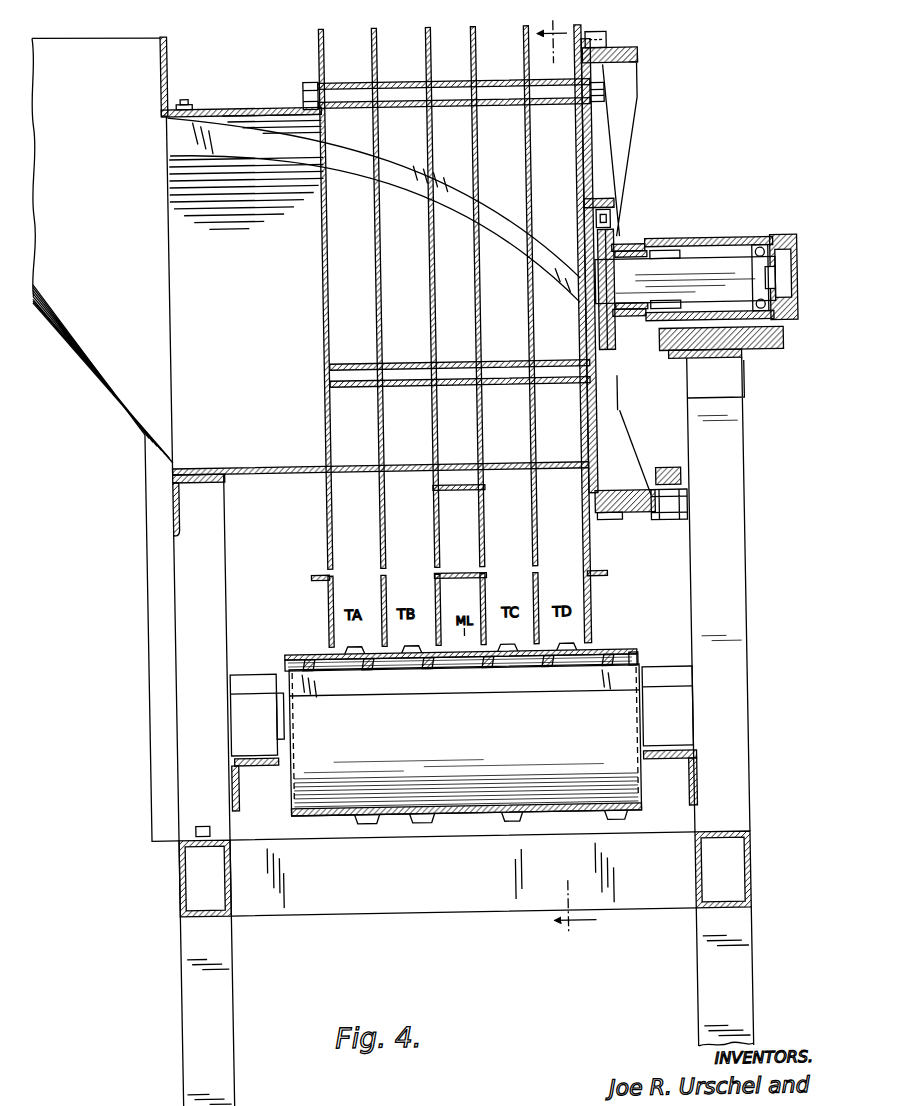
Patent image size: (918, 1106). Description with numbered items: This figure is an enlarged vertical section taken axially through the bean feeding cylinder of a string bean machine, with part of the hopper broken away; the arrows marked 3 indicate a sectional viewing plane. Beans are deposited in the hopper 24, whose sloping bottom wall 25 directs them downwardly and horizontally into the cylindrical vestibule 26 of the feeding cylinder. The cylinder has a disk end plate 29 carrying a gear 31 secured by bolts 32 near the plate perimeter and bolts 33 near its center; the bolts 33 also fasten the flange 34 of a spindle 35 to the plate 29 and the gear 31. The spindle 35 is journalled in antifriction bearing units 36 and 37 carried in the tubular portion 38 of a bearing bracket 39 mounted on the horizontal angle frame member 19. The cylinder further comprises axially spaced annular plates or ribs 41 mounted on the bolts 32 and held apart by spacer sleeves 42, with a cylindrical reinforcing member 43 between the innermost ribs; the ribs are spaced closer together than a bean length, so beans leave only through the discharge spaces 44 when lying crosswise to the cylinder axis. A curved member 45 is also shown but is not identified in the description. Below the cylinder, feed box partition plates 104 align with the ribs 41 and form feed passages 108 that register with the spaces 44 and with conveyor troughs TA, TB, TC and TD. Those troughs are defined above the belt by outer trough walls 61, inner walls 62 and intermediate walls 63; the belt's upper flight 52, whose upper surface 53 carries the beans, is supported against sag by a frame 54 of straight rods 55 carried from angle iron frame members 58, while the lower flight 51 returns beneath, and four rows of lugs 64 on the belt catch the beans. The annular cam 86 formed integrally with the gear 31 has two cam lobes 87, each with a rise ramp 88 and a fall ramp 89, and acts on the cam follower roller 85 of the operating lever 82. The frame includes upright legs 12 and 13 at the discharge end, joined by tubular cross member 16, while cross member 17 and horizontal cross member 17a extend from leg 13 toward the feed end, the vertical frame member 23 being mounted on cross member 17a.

The upright leg 12 is at (747, 997).
The upright leg 13 is at (174, 1051).
The tubular cross member 16 is at (398, 912).
The tubular cross member 17 is at (180, 912).
The horizontal cross member 17a is at (176, 520).
The angle frame member 19 is at (750, 394).
The vertical frame member 23 is at (174, 475).
The hopper 24 is at (176, 164).
The sloping bottom wall 25 is at (80, 358).
The cylindrical vestibule 26 is at (377, 292).
The disk end plate 29 is at (584, 146).
The gear 31 is at (607, 34).
The bolts 32 is at (499, 88).
The bolts 33 is at (600, 220).
The flange 34 is at (590, 331).
The spindle 35 is at (689, 262).
The antifriction bearing unit 36 is at (637, 252).
The antifriction bearing unit 37 is at (766, 250).
The tubular portion 38 is at (731, 243).
The bearing bracket 39 is at (787, 345).
The annular plates 41 is at (312, 34).
The spacer sleeves 42 is at (340, 81).
The cylindrical reinforcing member 43 is at (461, 485).
The discharge spaces 44 is at (354, 482).
The feed belt 45 is at (418, 186).
The lower flight 51 is at (472, 815).
The upper flight 52 is at (636, 654).
The bean supporting and transfer surface 53 is at (612, 647).
The frame 54 is at (640, 661).
The straight rods 55 is at (368, 669).
The angle iron frame members 58 is at (232, 767).
The outer conveyor trough walls 61 is at (327, 603).
The inner conveyor trough walls 62 is at (441, 589).
The intermediate walls 63 is at (386, 589).
The lugs 64 is at (418, 823).
The operating lever 82 is at (683, 478).
The cam follower roller 85 is at (690, 507).
The annular cam 86 is at (640, 52).
The cam lobes 87 is at (648, 64).
The rise ramp portion 88 is at (640, 458).
The fall ramp portion 89 is at (641, 139).
The feed passage partition plates 104 is at (481, 546).
The feed passages 108 is at (344, 562).
The section line 3 is at (566, 477).